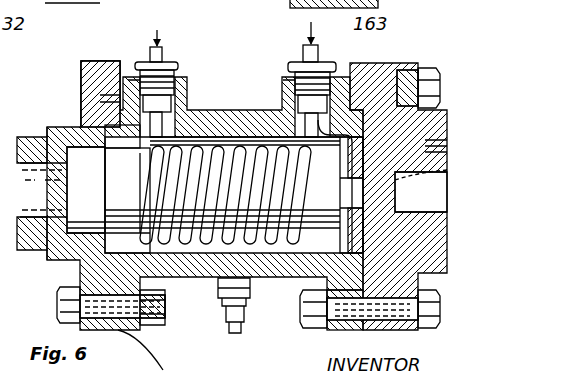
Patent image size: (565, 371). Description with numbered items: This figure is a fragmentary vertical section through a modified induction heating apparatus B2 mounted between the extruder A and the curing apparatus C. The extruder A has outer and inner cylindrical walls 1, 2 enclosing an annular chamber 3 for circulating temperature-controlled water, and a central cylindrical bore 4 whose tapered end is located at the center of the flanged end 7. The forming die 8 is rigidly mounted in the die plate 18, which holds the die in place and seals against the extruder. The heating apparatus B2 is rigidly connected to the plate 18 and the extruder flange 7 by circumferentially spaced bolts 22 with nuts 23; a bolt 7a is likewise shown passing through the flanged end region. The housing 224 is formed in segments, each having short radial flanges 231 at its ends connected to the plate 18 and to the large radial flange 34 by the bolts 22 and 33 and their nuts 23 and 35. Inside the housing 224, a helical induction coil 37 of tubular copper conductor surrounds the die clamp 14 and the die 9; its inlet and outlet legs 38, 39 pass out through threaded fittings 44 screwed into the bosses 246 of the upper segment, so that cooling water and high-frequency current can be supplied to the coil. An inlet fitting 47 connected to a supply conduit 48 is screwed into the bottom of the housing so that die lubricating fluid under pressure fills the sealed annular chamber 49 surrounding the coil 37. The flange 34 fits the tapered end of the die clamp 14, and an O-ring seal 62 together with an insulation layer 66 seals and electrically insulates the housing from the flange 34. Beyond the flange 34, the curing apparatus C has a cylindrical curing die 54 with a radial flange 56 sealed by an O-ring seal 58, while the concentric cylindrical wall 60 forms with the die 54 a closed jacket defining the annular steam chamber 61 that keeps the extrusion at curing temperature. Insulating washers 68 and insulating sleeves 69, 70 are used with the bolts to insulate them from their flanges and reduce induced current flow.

The outer cylindrical wall 1 is at (440, 328).
The inner cylindrical wall 2 is at (450, 140).
The annular chamber 3 is at (446, 248).
The central cylindrical bore 4 is at (421, 184).
The flanged end 7 is at (222, 40).
The bolt 7a is at (406, 63).
The forming die 8 is at (396, 198).
The die 9 is at (358, 203).
The die clamp 14 is at (122, 245).
The die plate 18 is at (405, 51).
The bolts 22 is at (442, 312).
The nuts 23 is at (312, 330).
The bolts 33 is at (56, 310).
The large radial flange 34 is at (80, 98).
The nuts 35 is at (181, 321).
The helical induction coil 37 is at (157, 206).
The inlet leg 38 is at (300, 58).
The outlet leg 39 is at (122, 139).
The threaded fittings 44 is at (145, 60).
The inlet fitting 47 is at (245, 288).
The supply conduit 48 is at (240, 335).
The annular chamber 49 is at (236, 128).
The curing die 54 is at (42, 214).
The radial flange 56 is at (88, 160).
The O-ring seal 58 is at (70, 228).
The concentric cylindrical wall 60 is at (41, 182).
The annular fluid chamber 61 is at (21, 273).
The O-ring seal 62 is at (80, 276).
The insulation layer 66 is at (80, 100).
The insulating washers 68 is at (66, 292).
The insulating sleeves 69 is at (76, 330).
The insulating sleeves 70 is at (372, 324).
The housing 224 is at (212, 302).
The short radial flanges 231 is at (319, 348).
The bosses 246 is at (130, 78).
The extruder A is at (446, 68).
The induction heating apparatus B2 is at (216, 104).
The curing apparatus C is at (64, 118).